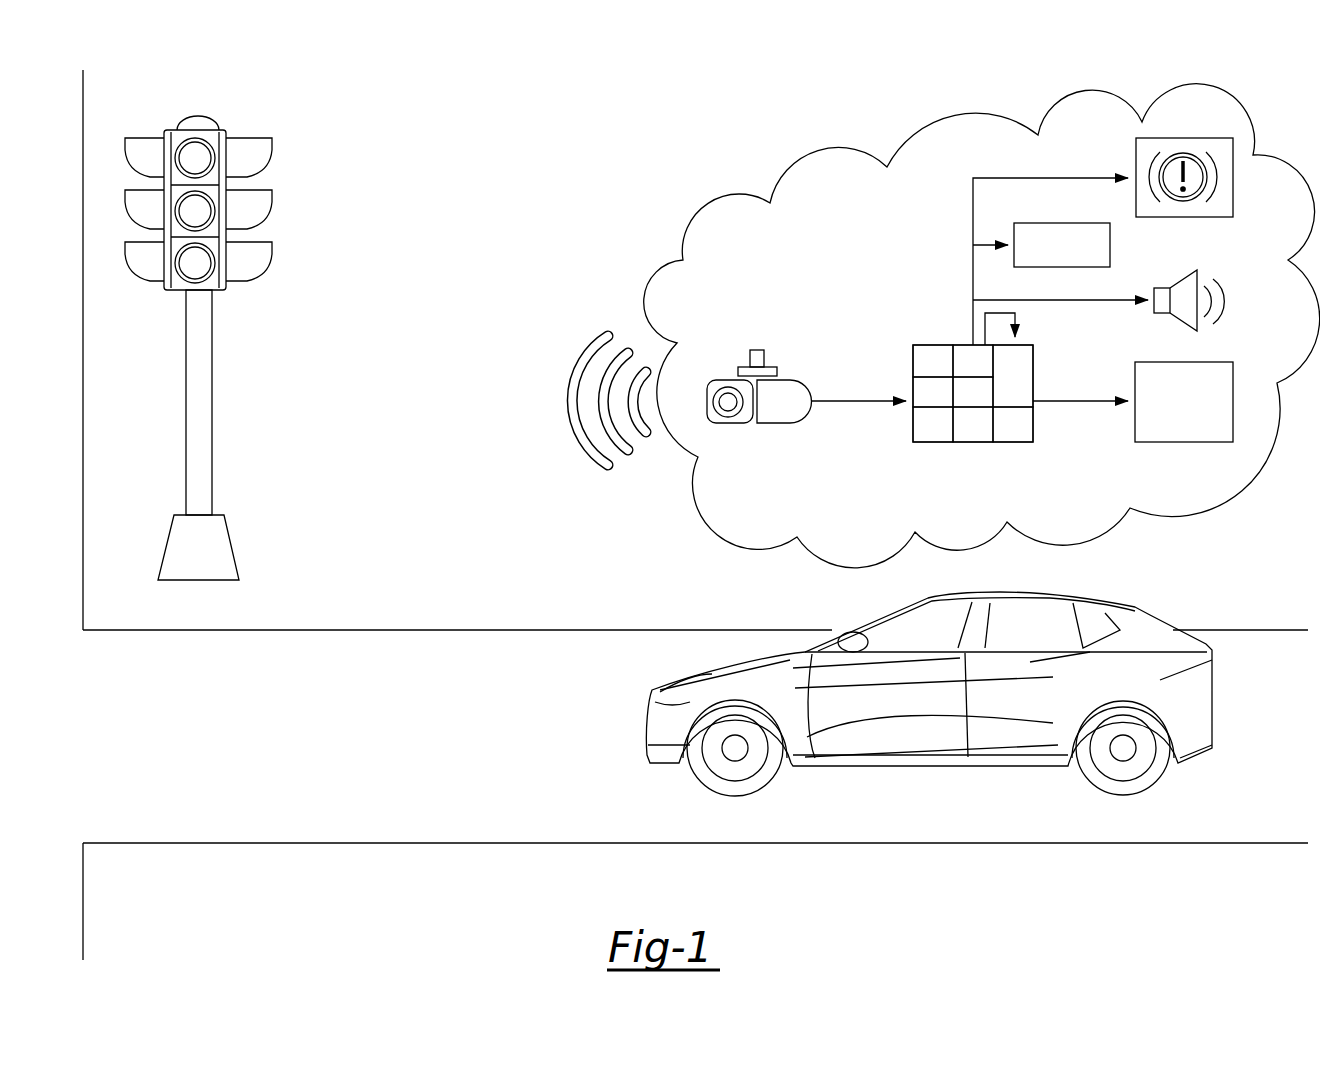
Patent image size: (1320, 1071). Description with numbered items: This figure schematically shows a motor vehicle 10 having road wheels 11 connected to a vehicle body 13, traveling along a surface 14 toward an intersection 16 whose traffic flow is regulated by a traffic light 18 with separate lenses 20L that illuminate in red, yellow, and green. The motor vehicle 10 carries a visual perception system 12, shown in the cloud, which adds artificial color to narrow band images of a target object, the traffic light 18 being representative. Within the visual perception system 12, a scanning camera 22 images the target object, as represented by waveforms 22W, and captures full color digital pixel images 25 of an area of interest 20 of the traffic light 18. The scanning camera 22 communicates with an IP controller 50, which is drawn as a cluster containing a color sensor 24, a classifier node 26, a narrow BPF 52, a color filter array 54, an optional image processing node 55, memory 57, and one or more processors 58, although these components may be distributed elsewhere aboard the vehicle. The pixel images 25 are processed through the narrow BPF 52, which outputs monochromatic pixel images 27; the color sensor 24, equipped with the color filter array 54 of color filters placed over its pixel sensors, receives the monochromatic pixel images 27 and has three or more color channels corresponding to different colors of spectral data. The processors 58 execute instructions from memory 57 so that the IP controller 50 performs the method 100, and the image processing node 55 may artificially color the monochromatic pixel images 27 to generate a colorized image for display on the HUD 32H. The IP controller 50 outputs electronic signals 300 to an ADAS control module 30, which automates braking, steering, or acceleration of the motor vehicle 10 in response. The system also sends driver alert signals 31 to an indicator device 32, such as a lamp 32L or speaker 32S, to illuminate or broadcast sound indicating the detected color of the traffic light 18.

The motor vehicle 10 is at (952, 680).
The road wheels 11 is at (712, 792).
The visual perception system 12 is at (945, 118).
The vehicle body 13 is at (893, 722).
The surface 14 is at (256, 746).
The intersection 16 is at (126, 606).
The traffic light 18 is at (238, 319).
The area of interest 20 is at (178, 128).
The lenses 20L is at (210, 160).
The scanning camera 22 is at (760, 338).
The waveforms 22W is at (538, 356).
The color sensor 24 is at (933, 392).
The full color digital pixel images 25 is at (855, 400).
The classifier node 26 is at (933, 361).
The monochromatic pixel images 27 is at (1020, 318).
The ADAS control module 30 is at (1183, 443).
The driver alert signals 31 is at (1055, 178).
The indicator device 32 is at (1160, 194).
The HUD 32H is at (1111, 247).
The lamp 32L is at (1183, 135).
The speaker 32S is at (1200, 285).
The IP controller 50 is at (930, 445).
The narrow BPF 52 is at (973, 361).
The color filter array 54 is at (1013, 376).
The image processing node 55 is at (973, 392).
The memory 57 is at (975, 445).
The processor 58 is at (1015, 445).
The method 100 is at (933, 424).
The electronic signals 300 is at (1080, 404).